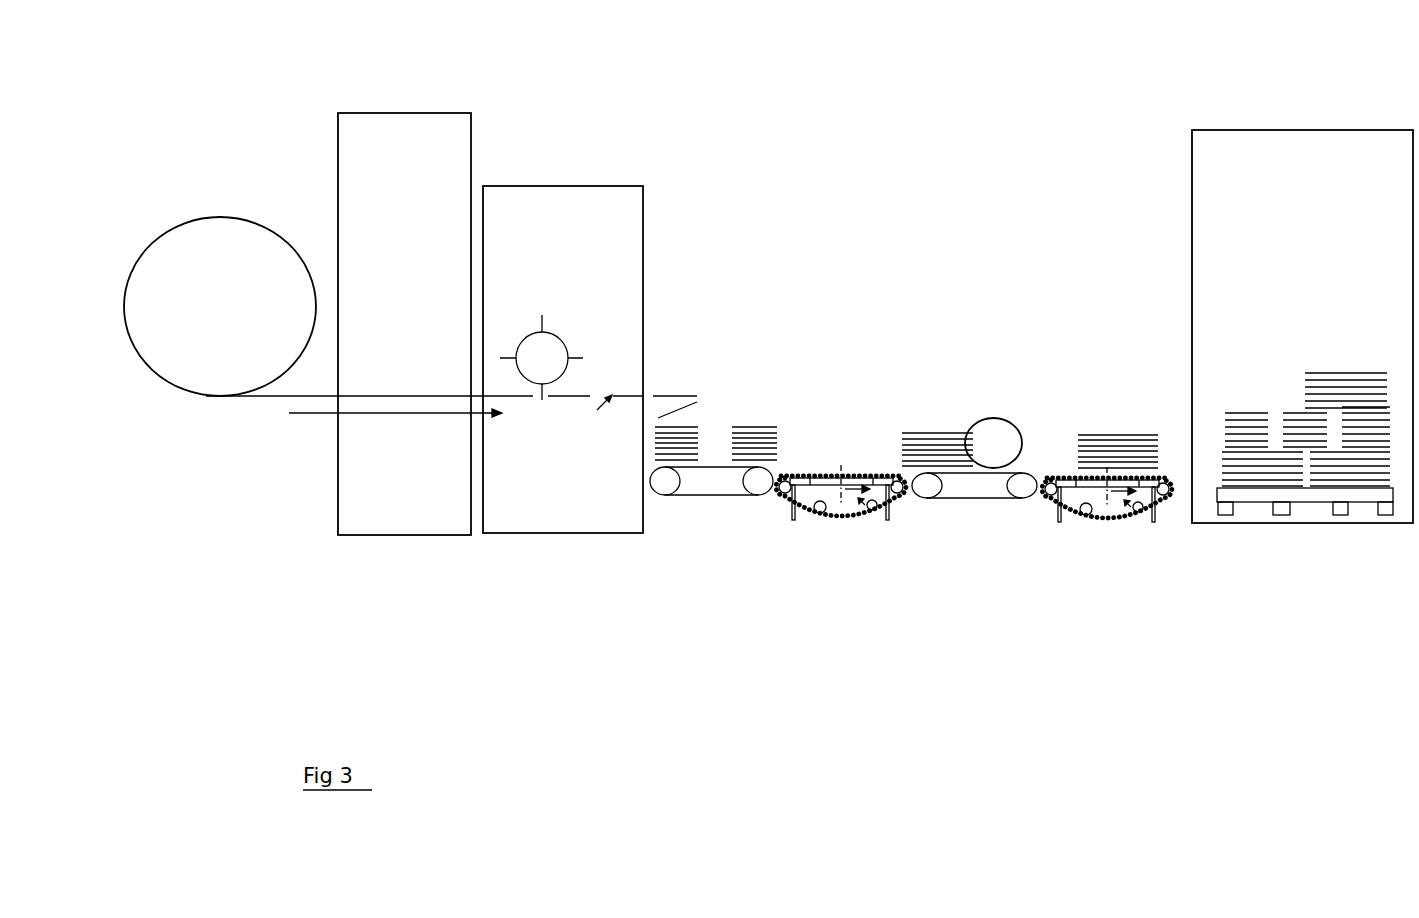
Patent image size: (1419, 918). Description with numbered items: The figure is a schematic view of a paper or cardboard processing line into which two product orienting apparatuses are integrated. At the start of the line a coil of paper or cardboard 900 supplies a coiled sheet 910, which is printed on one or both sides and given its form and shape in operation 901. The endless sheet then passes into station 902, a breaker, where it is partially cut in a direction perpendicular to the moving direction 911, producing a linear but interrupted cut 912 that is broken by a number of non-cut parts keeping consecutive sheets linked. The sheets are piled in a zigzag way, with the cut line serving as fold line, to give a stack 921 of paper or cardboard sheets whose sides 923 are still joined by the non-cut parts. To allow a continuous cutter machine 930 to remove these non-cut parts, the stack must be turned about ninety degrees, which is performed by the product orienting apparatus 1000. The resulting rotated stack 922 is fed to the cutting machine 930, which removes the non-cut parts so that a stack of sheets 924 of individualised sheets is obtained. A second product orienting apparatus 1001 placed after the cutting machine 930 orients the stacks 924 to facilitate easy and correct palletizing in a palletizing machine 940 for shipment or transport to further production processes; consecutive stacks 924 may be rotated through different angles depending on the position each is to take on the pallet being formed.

The coil of paper or cardboard 900 is at (167, 237).
The forming operation 901 is at (380, 113).
The breaker station 902 is at (558, 186).
The coiled sheet 910 is at (245, 400).
The moving direction 911 is at (395, 427).
The interrupted cut 912 is at (597, 414).
The stack of sheets 921 is at (677, 442).
The rotated stack 922 is at (935, 433).
The sides 923 is at (695, 435).
The stack of individualised sheets 924 is at (1097, 435).
The continuous cutter machine 930 is at (1030, 404).
The palletizing machine 940 is at (1298, 130).
The product orienting apparatus 1000 is at (852, 528).
The second product orienting apparatus 1001 is at (1116, 530).